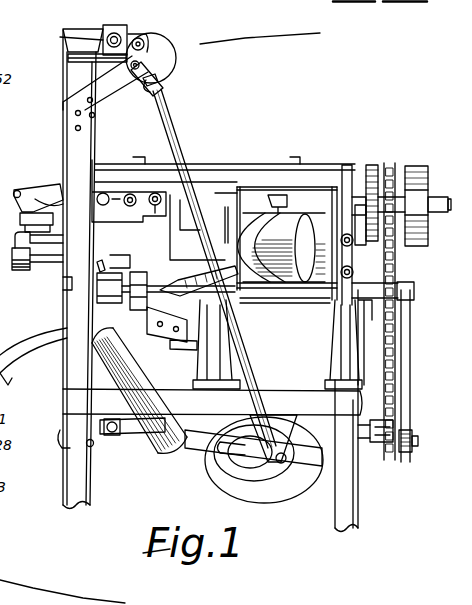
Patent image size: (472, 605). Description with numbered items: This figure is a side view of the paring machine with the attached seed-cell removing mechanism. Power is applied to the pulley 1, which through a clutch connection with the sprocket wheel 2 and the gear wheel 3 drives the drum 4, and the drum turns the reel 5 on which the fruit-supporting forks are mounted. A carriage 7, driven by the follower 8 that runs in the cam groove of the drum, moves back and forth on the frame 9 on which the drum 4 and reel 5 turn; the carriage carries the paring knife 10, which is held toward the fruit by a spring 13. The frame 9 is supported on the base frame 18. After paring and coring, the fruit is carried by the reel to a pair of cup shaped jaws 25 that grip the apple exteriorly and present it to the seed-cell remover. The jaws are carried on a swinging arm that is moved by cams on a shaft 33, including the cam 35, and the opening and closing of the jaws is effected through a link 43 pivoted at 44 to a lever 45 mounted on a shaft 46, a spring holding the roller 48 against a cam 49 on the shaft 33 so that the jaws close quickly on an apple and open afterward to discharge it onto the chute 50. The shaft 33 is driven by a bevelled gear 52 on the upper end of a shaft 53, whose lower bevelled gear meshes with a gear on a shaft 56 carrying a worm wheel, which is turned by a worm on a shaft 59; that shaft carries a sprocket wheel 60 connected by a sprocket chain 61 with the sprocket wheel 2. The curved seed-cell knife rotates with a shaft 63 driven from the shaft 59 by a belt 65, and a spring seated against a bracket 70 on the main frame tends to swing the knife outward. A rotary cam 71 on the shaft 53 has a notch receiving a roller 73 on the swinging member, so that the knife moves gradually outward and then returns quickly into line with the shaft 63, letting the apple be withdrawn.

The pulley 1 is at (420, 165).
The sprocket wheel 2 is at (393, 160).
The gear wheel 3 is at (374, 160).
The drum 4 is at (296, 182).
The reel 5 is at (192, 163).
The carriage 7 is at (34, 188).
The follower 8 is at (278, 184).
The frame 9 is at (236, 178).
The paring knife 10 is at (100, 264).
The spring 13 is at (31, 202).
The base frame 18 is at (75, 403).
The cup shaped jaws 25 is at (105, 306).
The shaft 33 is at (163, 62).
The cam 35 is at (158, 50).
The link 43 is at (63, 82).
The pivot 44 is at (65, 29).
The lever 45 is at (60, 37).
The shaft 46 is at (118, 32).
The roller 48 is at (141, 38).
The cam 49 is at (150, 78).
The chute 50 is at (158, 456).
The bevelled gear 52 is at (152, 74).
The shaft 53 is at (170, 133).
The shaft 56 is at (286, 468).
The shaft 59 is at (385, 432).
The sprocket wheel 60 is at (405, 442).
The sprocket chain 61 is at (393, 362).
The shaft 63 is at (310, 290).
The belt 65 is at (406, 384).
The bracket 70 is at (80, 288).
The rotary cam 71 is at (232, 300).
The roller 73 is at (190, 324).